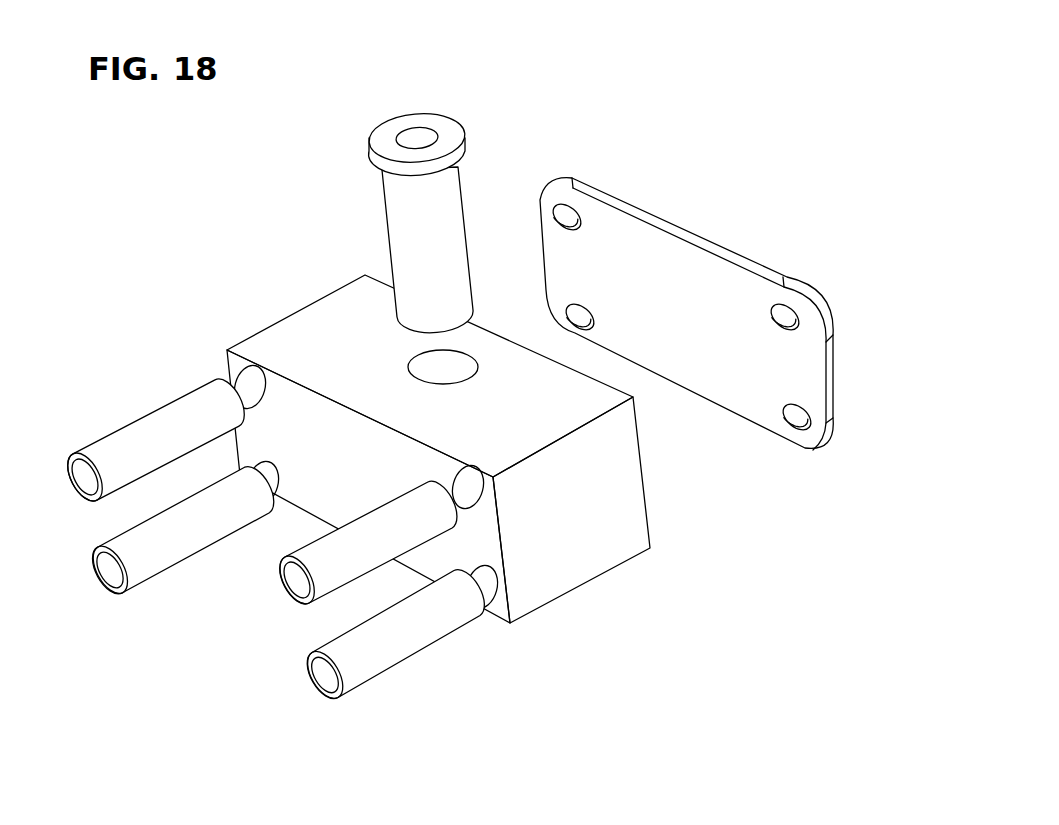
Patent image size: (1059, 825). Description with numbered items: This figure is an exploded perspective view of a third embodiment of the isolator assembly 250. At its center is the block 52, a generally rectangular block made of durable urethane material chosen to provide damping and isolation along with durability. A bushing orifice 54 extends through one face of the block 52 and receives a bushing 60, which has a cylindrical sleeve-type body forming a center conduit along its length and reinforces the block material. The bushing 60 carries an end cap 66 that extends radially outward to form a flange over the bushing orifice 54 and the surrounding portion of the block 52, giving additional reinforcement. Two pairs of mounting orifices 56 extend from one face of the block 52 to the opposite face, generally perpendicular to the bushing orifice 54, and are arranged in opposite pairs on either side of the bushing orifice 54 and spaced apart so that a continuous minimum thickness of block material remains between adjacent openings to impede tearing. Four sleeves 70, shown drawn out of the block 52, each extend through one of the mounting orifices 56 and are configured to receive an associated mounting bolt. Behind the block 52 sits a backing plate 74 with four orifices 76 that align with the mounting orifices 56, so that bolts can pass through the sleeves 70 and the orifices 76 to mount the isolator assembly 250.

The isolator assembly 250 is at (225, 250).
The block 52 is at (583, 570).
The bushing orifice 54 is at (460, 363).
The mounting orifices 56 is at (250, 383).
The bushing 60 is at (400, 215).
The end cap 66 is at (447, 125).
The sleeves 70 is at (123, 445).
The backing plate 74 is at (670, 225).
The orifices 76 is at (562, 218).